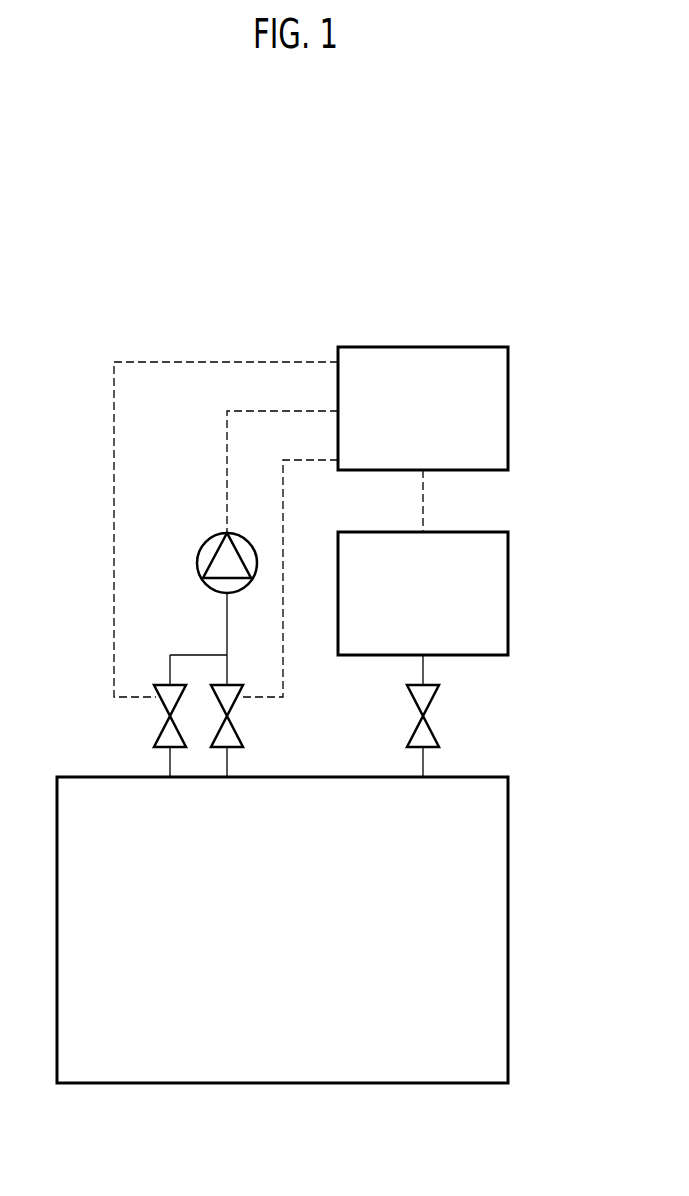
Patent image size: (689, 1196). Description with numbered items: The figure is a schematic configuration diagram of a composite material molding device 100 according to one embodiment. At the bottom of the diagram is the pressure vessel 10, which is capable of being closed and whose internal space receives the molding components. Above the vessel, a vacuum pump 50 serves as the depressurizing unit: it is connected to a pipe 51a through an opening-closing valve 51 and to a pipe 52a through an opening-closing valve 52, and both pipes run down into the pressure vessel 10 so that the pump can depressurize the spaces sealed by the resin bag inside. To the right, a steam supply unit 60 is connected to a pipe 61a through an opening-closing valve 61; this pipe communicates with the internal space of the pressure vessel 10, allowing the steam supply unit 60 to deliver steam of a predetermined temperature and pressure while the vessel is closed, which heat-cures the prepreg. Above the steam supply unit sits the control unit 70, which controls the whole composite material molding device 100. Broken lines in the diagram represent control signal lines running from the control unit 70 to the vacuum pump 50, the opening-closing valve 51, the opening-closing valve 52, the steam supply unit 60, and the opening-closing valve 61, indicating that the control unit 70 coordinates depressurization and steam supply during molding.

The composite material molding device 100 is at (60, 318).
The pressure vessel 10 is at (395, 1085).
The vacuum pump 50 is at (207, 535).
The opening-closing valve 51 is at (232, 710).
The pipe 51a is at (228, 758).
The opening-closing valve 52 is at (158, 712).
The pipe 52a is at (170, 758).
The steam supply unit 60 is at (508, 592).
The opening-closing valve 61 is at (438, 693).
The pipe 61a is at (423, 757).
The control unit 70 is at (508, 408).